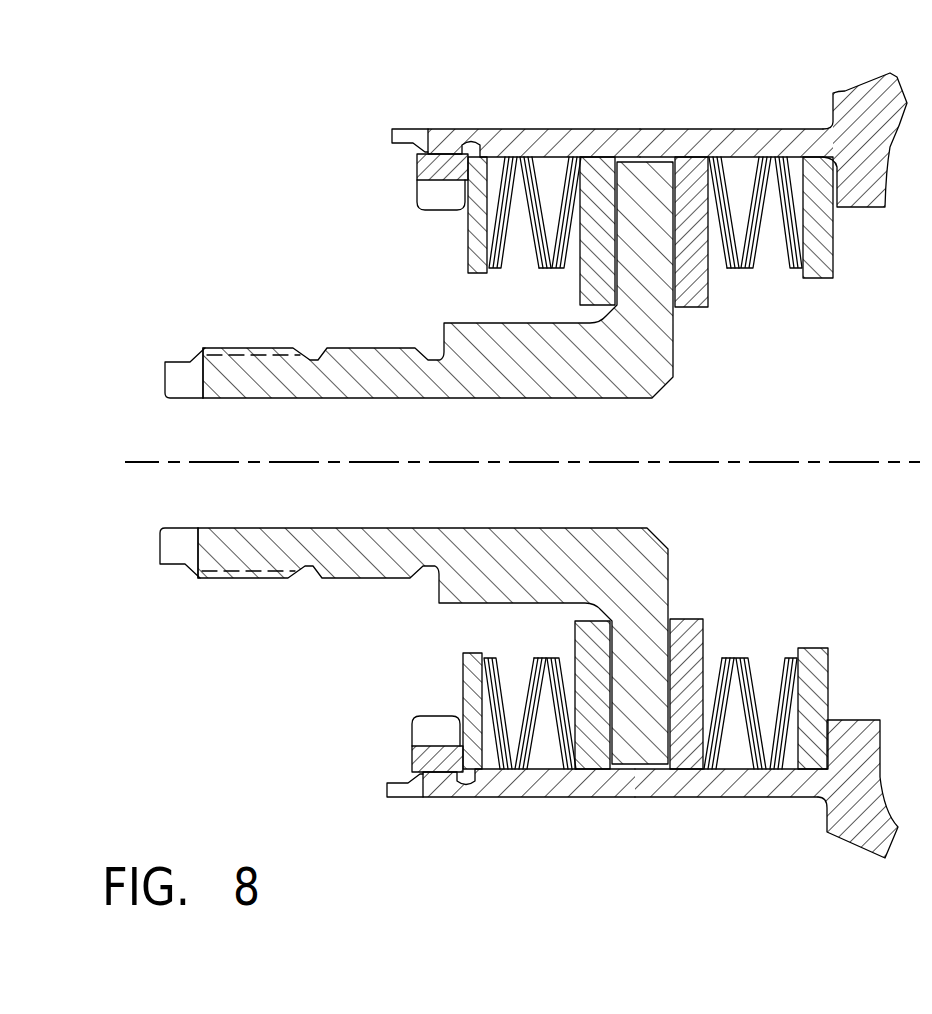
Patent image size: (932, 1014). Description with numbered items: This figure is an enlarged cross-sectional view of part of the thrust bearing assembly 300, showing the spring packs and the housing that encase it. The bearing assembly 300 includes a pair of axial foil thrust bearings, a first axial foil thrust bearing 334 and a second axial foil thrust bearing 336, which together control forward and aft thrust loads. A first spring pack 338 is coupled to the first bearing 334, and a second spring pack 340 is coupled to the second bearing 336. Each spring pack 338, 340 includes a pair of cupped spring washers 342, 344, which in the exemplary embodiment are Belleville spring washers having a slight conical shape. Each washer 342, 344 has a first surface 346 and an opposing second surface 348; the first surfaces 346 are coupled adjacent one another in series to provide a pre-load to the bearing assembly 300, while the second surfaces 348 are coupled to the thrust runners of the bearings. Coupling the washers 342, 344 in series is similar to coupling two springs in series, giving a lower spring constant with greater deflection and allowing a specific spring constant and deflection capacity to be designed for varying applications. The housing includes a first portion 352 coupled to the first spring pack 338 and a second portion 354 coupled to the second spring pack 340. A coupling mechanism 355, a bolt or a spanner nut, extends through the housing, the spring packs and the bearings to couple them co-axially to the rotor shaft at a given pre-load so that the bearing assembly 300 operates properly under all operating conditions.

The bearing assembly 300 is at (593, 72).
The first axial foil thrust bearing 334 is at (590, 160).
The second axial foil thrust bearing 336 is at (686, 160).
The first spring pack 338 is at (514, 137).
The second spring pack 340 is at (773, 133).
The spring washer 342 is at (517, 261).
The spring washer 344 is at (557, 273).
The first surface 346 is at (800, 223).
The second surface 348 is at (613, 257).
The first portion 352 is at (482, 258).
The second portion 354 is at (816, 278).
The coupling mechanism 355 is at (426, 164).